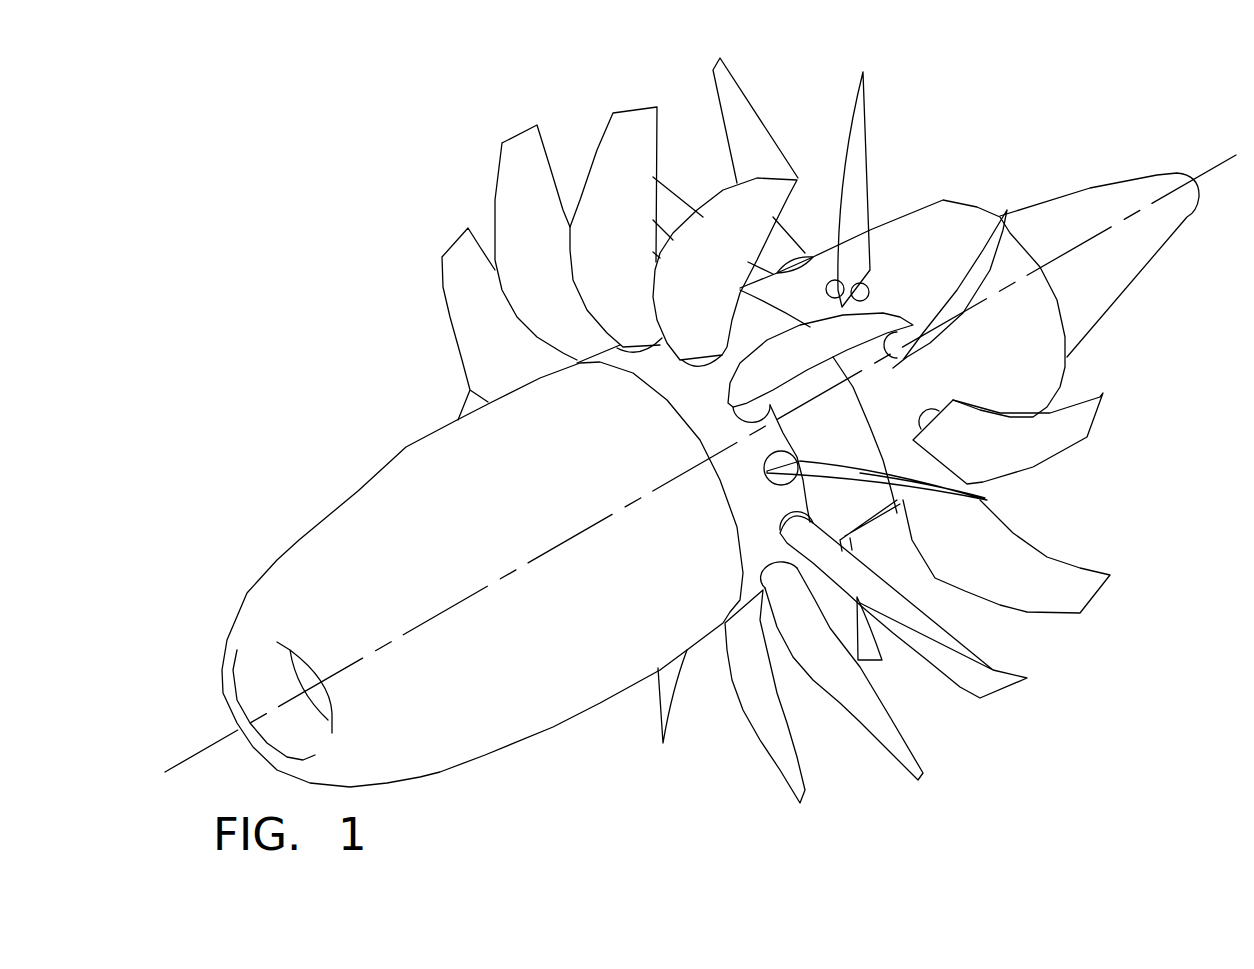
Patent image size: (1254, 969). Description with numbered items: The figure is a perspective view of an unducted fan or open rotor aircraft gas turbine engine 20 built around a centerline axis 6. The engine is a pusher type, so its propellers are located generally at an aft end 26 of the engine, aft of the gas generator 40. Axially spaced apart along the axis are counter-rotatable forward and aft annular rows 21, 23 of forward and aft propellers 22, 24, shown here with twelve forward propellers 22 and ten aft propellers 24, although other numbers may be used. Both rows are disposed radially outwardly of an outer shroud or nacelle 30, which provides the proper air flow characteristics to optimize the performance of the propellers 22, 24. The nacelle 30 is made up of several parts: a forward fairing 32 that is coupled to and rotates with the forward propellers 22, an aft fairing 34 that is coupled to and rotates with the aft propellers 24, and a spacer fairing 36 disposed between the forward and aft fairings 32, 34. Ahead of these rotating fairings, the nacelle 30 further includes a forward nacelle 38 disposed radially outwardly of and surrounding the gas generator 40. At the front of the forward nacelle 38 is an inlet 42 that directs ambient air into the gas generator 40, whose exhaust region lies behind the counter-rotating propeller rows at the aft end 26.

The centerline axis 6 is at (182, 766).
The open rotor aircraft gas turbine engine 20 is at (510, 802).
The forward annular row 21 is at (724, 480).
The forward propellers 22 is at (543, 138).
The aft annular row 23 is at (946, 347).
The aft propellers 24 is at (737, 82).
The aft end 26 is at (772, 305).
The nacelle 30 is at (405, 446).
The forward fairing 32 is at (690, 393).
The aft fairing 34 is at (913, 223).
The spacer fairing 36 is at (851, 403).
The forward nacelle 38 is at (523, 672).
The gas generator 40 is at (262, 697).
The inlet 42 is at (255, 625).